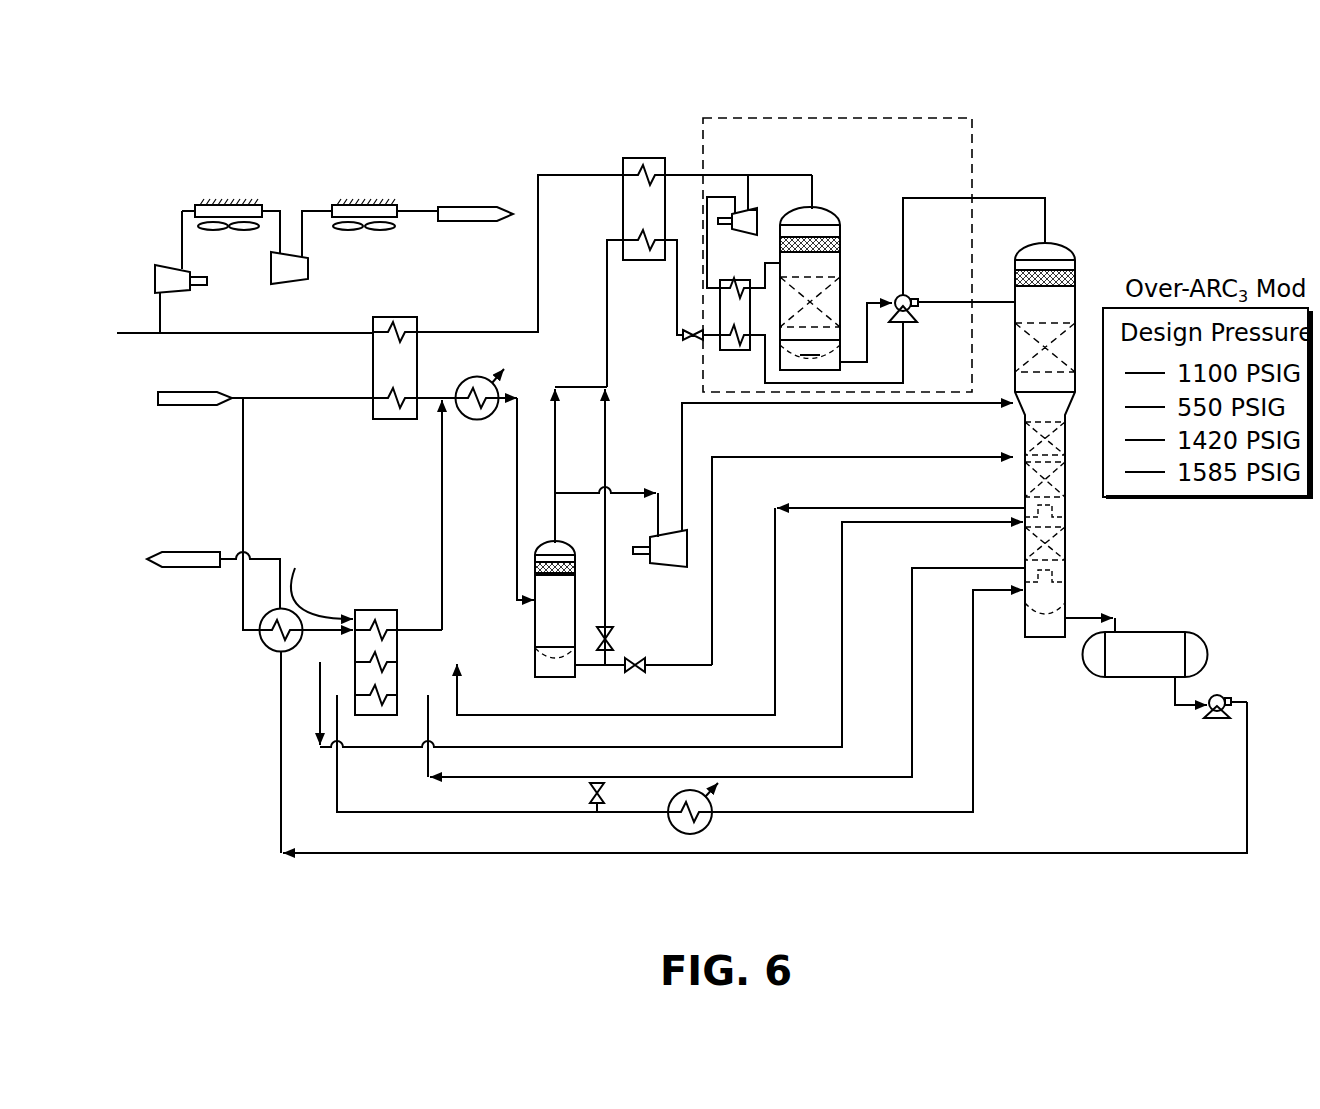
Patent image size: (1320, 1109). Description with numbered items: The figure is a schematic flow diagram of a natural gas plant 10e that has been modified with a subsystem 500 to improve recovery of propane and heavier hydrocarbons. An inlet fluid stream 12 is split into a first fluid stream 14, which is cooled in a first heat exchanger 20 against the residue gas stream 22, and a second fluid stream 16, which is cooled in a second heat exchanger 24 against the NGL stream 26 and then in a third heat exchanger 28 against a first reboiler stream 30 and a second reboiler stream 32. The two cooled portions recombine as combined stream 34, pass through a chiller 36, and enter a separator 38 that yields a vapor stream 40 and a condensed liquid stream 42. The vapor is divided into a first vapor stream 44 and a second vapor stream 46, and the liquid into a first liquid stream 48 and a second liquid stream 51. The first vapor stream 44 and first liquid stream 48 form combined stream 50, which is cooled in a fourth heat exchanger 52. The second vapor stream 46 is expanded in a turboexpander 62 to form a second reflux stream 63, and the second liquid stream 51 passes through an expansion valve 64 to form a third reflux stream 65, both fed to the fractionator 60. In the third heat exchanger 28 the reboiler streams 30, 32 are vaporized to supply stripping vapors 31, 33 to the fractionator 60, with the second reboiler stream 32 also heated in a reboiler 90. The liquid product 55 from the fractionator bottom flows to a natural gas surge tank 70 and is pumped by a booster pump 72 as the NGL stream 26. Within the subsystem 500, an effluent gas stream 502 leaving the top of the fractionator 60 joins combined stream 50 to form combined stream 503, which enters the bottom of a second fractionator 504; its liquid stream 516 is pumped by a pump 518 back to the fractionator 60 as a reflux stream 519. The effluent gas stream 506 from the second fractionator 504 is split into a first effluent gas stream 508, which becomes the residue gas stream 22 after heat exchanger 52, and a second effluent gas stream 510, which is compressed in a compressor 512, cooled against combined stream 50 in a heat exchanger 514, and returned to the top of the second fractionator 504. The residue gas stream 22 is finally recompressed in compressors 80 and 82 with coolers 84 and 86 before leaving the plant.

The natural gas plant 10e is at (1118, 104).
The inlet fluid stream 12 is at (170, 390).
The first fluid stream 14 is at (330, 397).
The second fluid stream 16 is at (242, 490).
The first heat exchanger 20 is at (396, 316).
The residue gas stream 22 is at (455, 222).
The second heat exchanger 24 is at (276, 650).
The NGL stream 26 is at (182, 552).
The third heat exchanger 28 is at (321, 579).
The first reboiler stream 30 is at (918, 507).
The stripping vapor 31 is at (935, 530).
The second reboiler stream 32 is at (492, 778).
The stripping vapor 33 is at (975, 722).
The combined stream 34 is at (455, 395).
The chiller 36 is at (460, 420).
The separator 38 is at (534, 636).
The vapor stream 40 is at (555, 538).
The condensed liquid stream 42 is at (583, 667).
The first vapor stream 44 is at (556, 430).
The second vapor stream 46 is at (590, 492).
The first liquid stream 48 is at (607, 458).
The combined stream 50 is at (607, 312).
The second liquid stream 51 is at (710, 640).
The fourth heat exchanger 52 is at (623, 157).
The liquid product 55 is at (1100, 618).
The fractionator 60 is at (1078, 265).
The turboexpander 62 is at (660, 536).
The second reflux stream 63 is at (715, 404).
The expansion valve 64 is at (640, 672).
The third reflux stream 65 is at (920, 456).
The natural gas surge tank 70 is at (1152, 631).
The booster pump 72 is at (1224, 695).
The compressor 80 is at (158, 264).
The compressor 82 is at (310, 266).
The cooler 84 is at (198, 204).
The cooler 86 is at (335, 204).
The reboiler 90 is at (690, 834).
The subsystem 500 is at (893, 115).
The effluent gas stream 502 is at (1048, 218).
The combined stream 503 is at (768, 335).
The second fractionator 504 is at (818, 210).
The effluent gas stream 506 is at (812, 183).
The first effluent gas stream 508 is at (730, 175).
The second effluent gas stream 510 is at (715, 198).
The compressor 512 is at (735, 300).
The heat exchanger 514 is at (718, 350).
The liquid stream 516 is at (848, 360).
The pump 518 is at (897, 296).
The reflux stream 519 is at (938, 304).